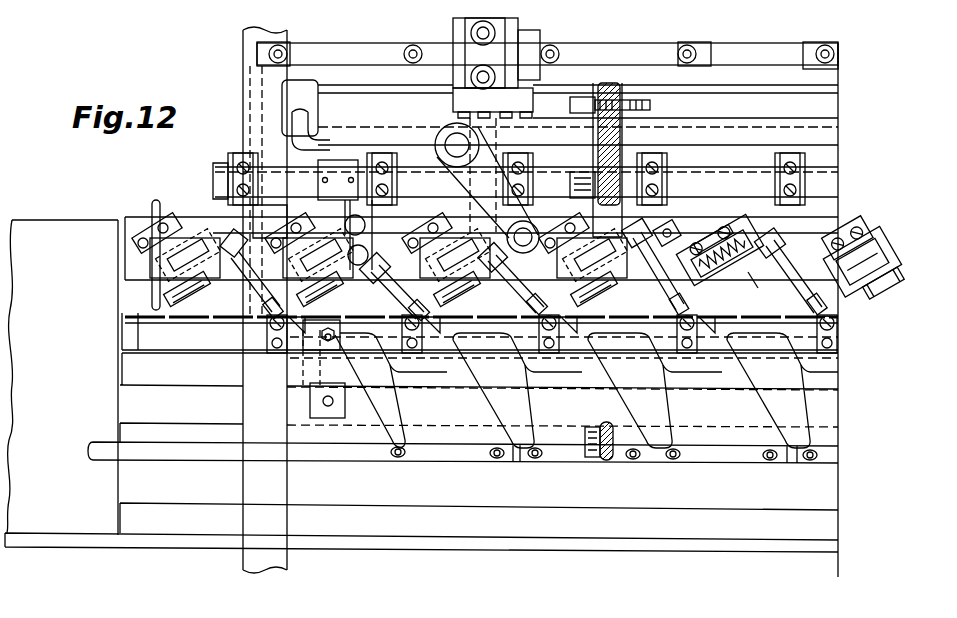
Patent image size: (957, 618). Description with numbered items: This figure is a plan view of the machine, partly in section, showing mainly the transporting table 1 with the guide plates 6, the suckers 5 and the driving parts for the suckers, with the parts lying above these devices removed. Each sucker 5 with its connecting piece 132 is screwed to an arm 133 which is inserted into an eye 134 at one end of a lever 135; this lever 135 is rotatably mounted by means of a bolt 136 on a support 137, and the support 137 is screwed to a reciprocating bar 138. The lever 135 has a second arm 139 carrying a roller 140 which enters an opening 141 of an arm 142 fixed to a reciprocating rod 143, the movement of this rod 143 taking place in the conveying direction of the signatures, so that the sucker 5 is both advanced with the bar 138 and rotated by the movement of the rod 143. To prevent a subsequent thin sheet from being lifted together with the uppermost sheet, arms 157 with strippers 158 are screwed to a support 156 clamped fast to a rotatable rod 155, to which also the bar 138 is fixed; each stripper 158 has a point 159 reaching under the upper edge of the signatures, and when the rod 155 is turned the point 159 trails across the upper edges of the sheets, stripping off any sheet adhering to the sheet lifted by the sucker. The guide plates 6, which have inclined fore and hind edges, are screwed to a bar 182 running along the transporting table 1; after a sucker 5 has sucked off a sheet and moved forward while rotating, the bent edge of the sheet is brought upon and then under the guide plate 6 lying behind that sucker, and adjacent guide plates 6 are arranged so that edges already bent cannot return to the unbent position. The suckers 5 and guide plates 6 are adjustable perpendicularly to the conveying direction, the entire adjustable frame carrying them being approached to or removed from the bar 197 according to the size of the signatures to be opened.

The transporting table 1 is at (40, 220).
The sucker 5 is at (397, 358).
The guide plate 6 is at (465, 347).
The connecting piece 132 is at (533, 359).
The arm 133 is at (533, 296).
The eye 134 is at (778, 235).
The lever 135 is at (757, 290).
The bolt 136 is at (882, 280).
The support 137 is at (848, 226).
The reciprocating bar 138 is at (672, 231).
The second arm 139 is at (868, 256).
The roller 140 is at (878, 256).
The opening 141 is at (733, 243).
The arm 142 is at (661, 257).
The reciprocating rod 143 is at (213, 252).
The rotatable rod 155 is at (702, 173).
The support 156 is at (398, 166).
The arm 157 is at (384, 211).
The stripper 158 is at (290, 330).
The point 159 is at (308, 343).
The bar 182 is at (354, 457).
The bar 197 is at (502, 551).